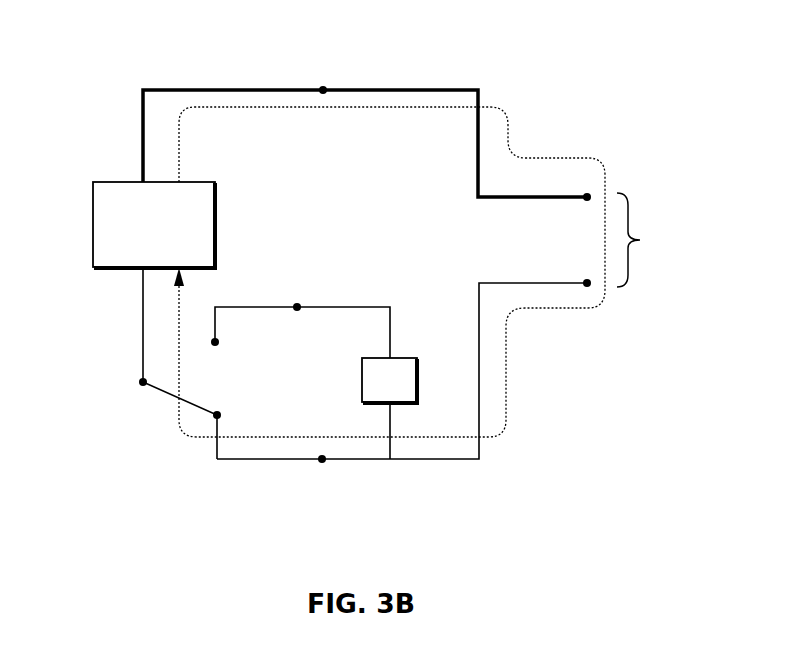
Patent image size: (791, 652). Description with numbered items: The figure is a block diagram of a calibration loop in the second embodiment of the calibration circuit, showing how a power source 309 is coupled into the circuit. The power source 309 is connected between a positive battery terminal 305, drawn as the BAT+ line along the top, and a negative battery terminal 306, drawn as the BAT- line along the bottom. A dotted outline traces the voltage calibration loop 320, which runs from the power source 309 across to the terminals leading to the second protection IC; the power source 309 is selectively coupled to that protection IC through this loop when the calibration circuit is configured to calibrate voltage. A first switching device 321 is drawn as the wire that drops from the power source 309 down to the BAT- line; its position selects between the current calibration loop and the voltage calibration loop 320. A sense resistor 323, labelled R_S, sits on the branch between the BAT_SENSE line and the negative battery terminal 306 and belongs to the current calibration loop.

The positive battery terminal 305 is at (323, 90).
The negative battery terminal 306 is at (322, 459).
The power source 309 is at (93, 262).
The voltage calibration loop 320 is at (500, 110).
The first switching device 321 is at (152, 412).
The sense resistor 323 is at (362, 382).